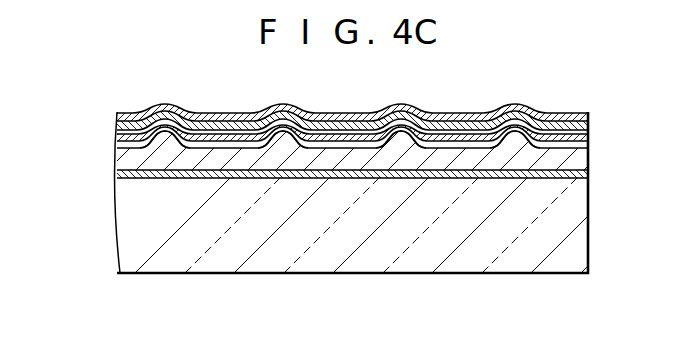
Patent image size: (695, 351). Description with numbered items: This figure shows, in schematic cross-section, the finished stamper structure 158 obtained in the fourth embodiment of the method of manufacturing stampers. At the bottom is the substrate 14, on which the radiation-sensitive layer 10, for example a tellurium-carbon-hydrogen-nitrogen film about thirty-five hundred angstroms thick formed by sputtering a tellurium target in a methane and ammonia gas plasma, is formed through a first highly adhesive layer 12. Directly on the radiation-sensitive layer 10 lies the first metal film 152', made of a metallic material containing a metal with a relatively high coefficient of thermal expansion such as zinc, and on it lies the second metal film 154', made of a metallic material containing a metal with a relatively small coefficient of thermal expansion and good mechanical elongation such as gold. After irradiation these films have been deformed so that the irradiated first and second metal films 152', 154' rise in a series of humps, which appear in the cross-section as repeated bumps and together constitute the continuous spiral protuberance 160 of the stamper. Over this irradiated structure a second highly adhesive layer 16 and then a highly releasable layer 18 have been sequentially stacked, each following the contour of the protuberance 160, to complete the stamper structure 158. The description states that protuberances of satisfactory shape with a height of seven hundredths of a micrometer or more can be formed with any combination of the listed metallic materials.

The radiation-sensitive layer 10 is at (588, 158).
The first highly adhesive layer 12 is at (588, 178).
The substrate 14 is at (508, 267).
The second highly adhesive layer 16 is at (588, 125).
The highly releasable layer 18 is at (566, 112).
The first metal film 152' is at (314, 146).
The second metal film 154' is at (314, 136).
The stamper structure 158 is at (593, 230).
The continuous spiral protuberance 160 is at (398, 103).